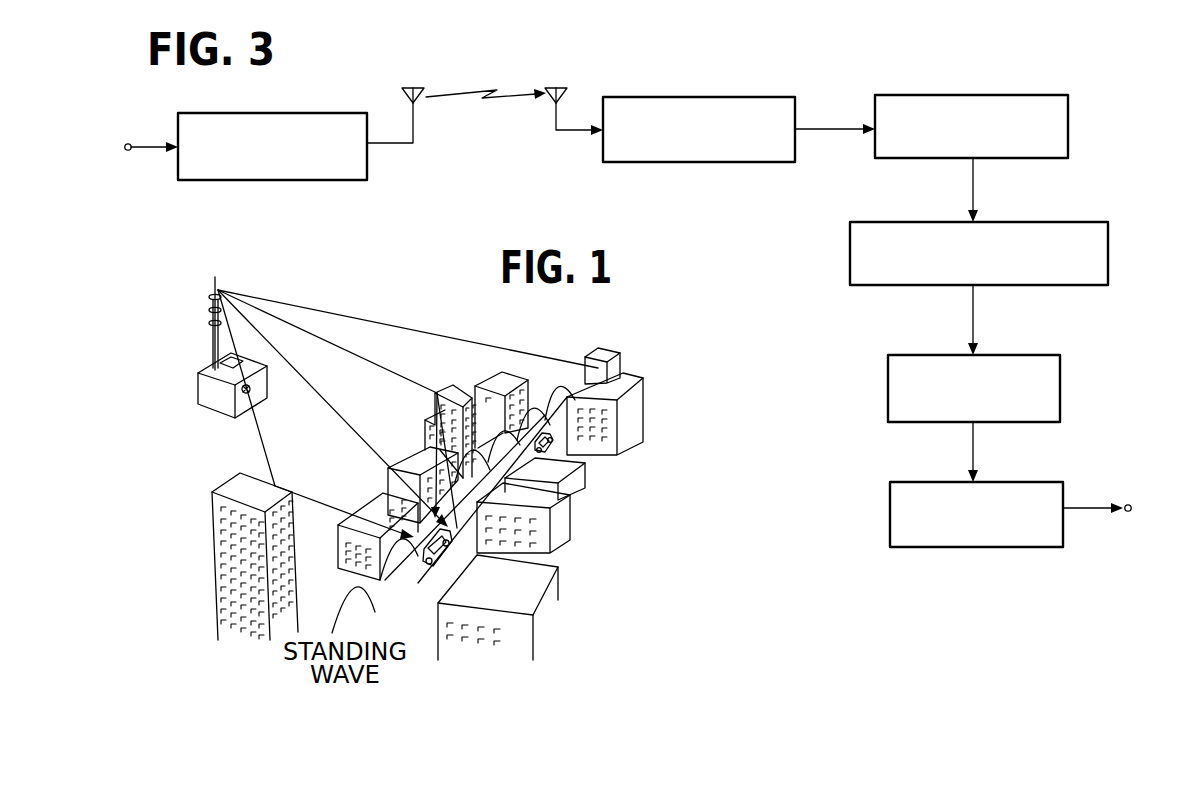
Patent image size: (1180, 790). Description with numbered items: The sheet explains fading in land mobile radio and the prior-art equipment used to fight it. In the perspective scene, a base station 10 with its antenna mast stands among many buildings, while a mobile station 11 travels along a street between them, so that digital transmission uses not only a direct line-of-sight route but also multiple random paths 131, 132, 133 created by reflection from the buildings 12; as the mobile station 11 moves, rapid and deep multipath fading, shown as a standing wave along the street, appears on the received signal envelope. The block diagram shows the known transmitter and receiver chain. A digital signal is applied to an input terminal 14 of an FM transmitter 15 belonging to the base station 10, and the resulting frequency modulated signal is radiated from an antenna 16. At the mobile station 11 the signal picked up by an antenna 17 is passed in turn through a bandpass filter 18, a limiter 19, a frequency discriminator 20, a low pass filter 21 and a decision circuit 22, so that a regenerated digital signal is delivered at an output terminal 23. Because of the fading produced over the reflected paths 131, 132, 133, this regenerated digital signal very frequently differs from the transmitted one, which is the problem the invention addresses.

In FIG. 1, the base station 10 is at (200, 392).
In FIG. 1, the mobile station 11 is at (417, 566).
In FIG. 1, the buildings (reflecting obstacles) 12 is at (423, 427).
In FIG. 1, the random path 131 is at (262, 445).
In FIG. 1, the random path 132 is at (312, 379).
In FIG. 1, the reflected radio wave paths 133 is at (394, 374).
In FIG. 3, the input terminal 14 is at (128, 151).
In FIG. 3, the FM transmitter 15 is at (282, 181).
In FIG. 3, the antenna 16 is at (413, 86).
In FIG. 3, the antenna 17 is at (558, 86).
In FIG. 3, the bandpass filter 18 is at (710, 163).
In FIG. 3, the limiter 19 is at (1068, 115).
In FIG. 3, the frequency discriminator 20 is at (1108, 245).
In FIG. 3, the low pass filter 21 is at (1060, 377).
In FIG. 3, the decision circuit 22 is at (980, 548).
In FIG. 3, the output terminal 23 is at (1128, 512).